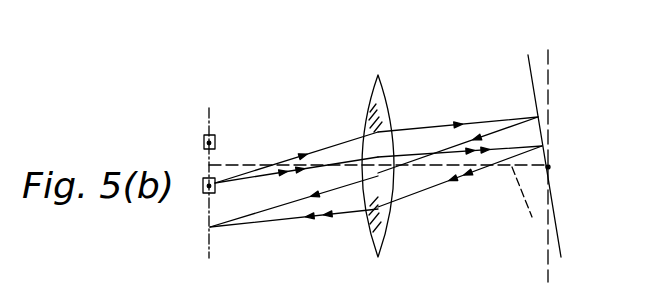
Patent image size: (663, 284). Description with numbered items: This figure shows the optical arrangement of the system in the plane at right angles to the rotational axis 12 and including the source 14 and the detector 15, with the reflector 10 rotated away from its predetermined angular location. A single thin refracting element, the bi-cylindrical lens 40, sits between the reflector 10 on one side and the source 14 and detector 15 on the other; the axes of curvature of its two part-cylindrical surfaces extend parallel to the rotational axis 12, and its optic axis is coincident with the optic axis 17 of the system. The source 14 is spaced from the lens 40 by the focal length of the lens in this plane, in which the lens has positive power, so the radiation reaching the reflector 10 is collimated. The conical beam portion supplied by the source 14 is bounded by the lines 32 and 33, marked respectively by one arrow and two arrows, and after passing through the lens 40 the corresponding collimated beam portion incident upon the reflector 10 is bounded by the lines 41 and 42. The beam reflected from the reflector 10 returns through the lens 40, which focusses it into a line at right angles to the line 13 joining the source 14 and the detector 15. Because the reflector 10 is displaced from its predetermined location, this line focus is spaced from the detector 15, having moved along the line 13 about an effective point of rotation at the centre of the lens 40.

The reflector 10 is at (529, 137).
The rotational axis 12 is at (550, 167).
The line including the source and the detector 13 is at (210, 253).
The source 14 is at (215, 182).
The detector 15 is at (210, 134).
The optic axis of the system 17 is at (522, 206).
The boundary of the conical beam portion 32 is at (330, 149).
The boundary of the conical beam portion 33 is at (263, 182).
The bi-cylindrical lens 40 is at (385, 88).
The boundary of the collimated beam portion incident upon the reflector 41 is at (458, 99).
The boundary of the collimated beam portion incident upon the reflector 42 is at (460, 112).